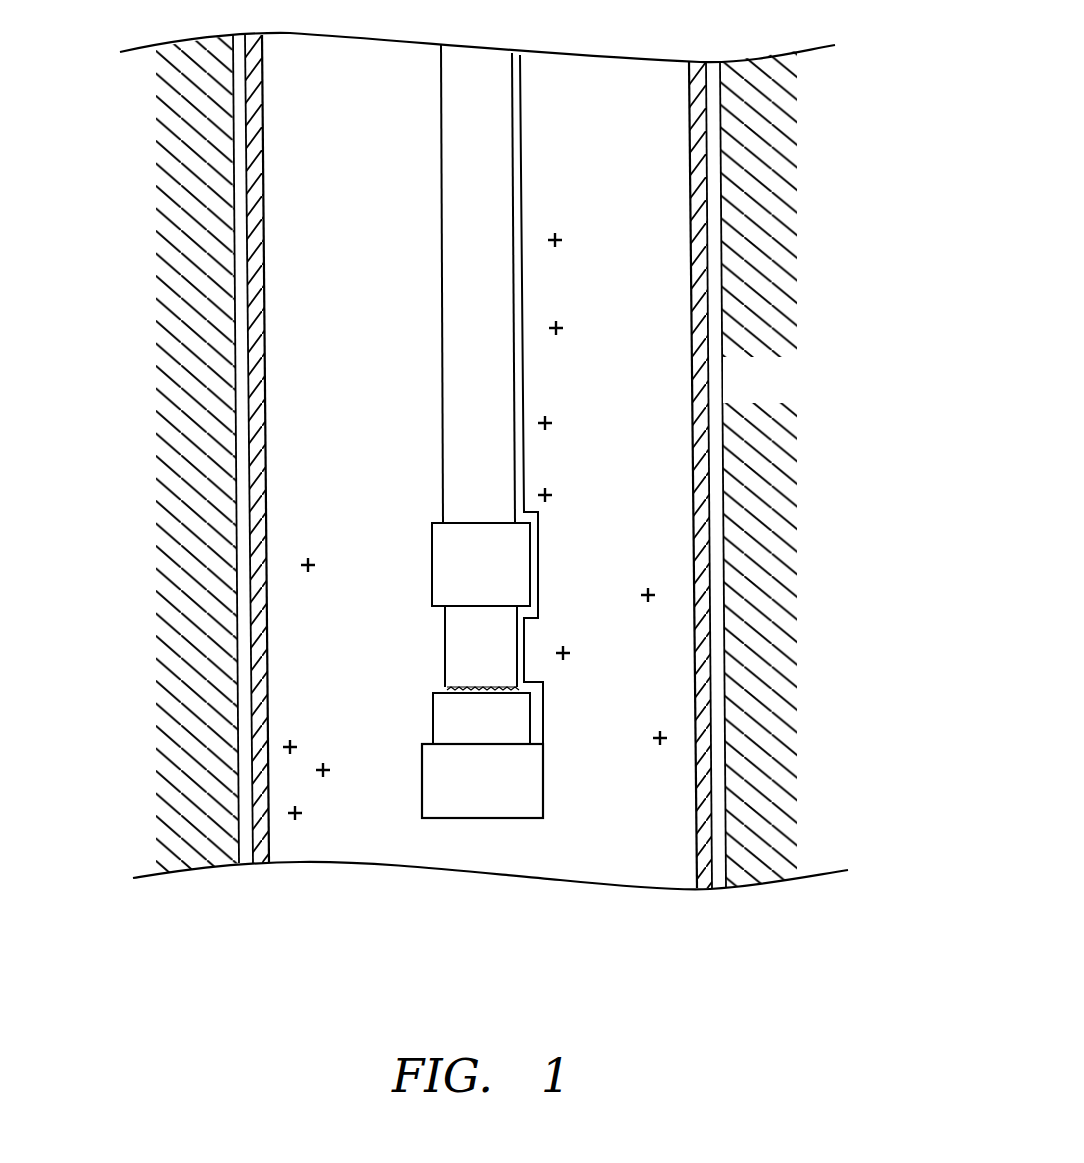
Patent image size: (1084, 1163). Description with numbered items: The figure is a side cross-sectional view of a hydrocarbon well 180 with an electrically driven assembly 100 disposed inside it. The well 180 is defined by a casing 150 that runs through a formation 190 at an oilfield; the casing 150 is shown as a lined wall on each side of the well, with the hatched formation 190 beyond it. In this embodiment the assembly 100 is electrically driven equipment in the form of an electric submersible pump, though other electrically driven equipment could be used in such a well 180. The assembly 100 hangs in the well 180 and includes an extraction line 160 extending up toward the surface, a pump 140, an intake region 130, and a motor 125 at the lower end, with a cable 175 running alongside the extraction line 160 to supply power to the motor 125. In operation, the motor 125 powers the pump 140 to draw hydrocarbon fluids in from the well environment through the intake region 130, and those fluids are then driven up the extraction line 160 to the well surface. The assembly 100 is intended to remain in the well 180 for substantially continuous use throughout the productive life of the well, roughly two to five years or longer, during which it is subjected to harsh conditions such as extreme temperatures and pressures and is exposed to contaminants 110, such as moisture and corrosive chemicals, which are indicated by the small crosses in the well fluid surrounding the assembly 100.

The electrically driven assembly 100 is at (459, 431).
The contaminants 110 is at (306, 565).
The motor 125 is at (425, 765).
The intake region 130 is at (458, 645).
The pump 140 is at (517, 570).
The casing 150 is at (260, 700).
The extraction line 160 is at (462, 335).
The cable 175 is at (517, 138).
The hydrocarbon well 180 is at (637, 399).
The formation 190 is at (783, 396).